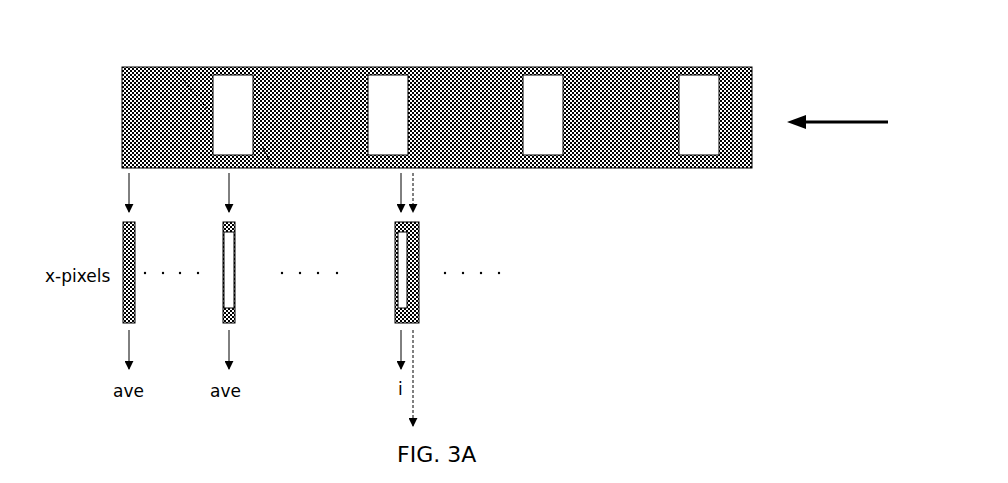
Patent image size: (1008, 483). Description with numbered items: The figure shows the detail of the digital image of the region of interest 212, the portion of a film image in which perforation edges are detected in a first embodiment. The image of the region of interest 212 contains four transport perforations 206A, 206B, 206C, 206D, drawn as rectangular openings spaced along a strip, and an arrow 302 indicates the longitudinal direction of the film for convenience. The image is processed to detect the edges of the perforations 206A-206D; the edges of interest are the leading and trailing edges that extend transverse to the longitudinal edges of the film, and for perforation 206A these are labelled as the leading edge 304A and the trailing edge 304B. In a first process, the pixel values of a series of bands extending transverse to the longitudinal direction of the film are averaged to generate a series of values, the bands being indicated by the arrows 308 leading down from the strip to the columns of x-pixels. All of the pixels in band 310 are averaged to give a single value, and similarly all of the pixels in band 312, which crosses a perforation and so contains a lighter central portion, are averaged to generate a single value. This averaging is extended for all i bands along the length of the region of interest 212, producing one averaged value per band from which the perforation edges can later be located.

The region of interest 212 is at (732, 112).
The transport perforation 206A is at (230, 90).
The transport perforation 206B is at (387, 88).
The transport perforation 206C is at (542, 88).
The transport perforation 206D is at (698, 88).
The leading edge 304A is at (172, 67).
The trailing edge 304B is at (272, 168).
The arrow 302 is at (837, 133).
The pixel columns readout 308 is at (240, 192).
The band 310 is at (122, 304).
The band 312 is at (230, 267).